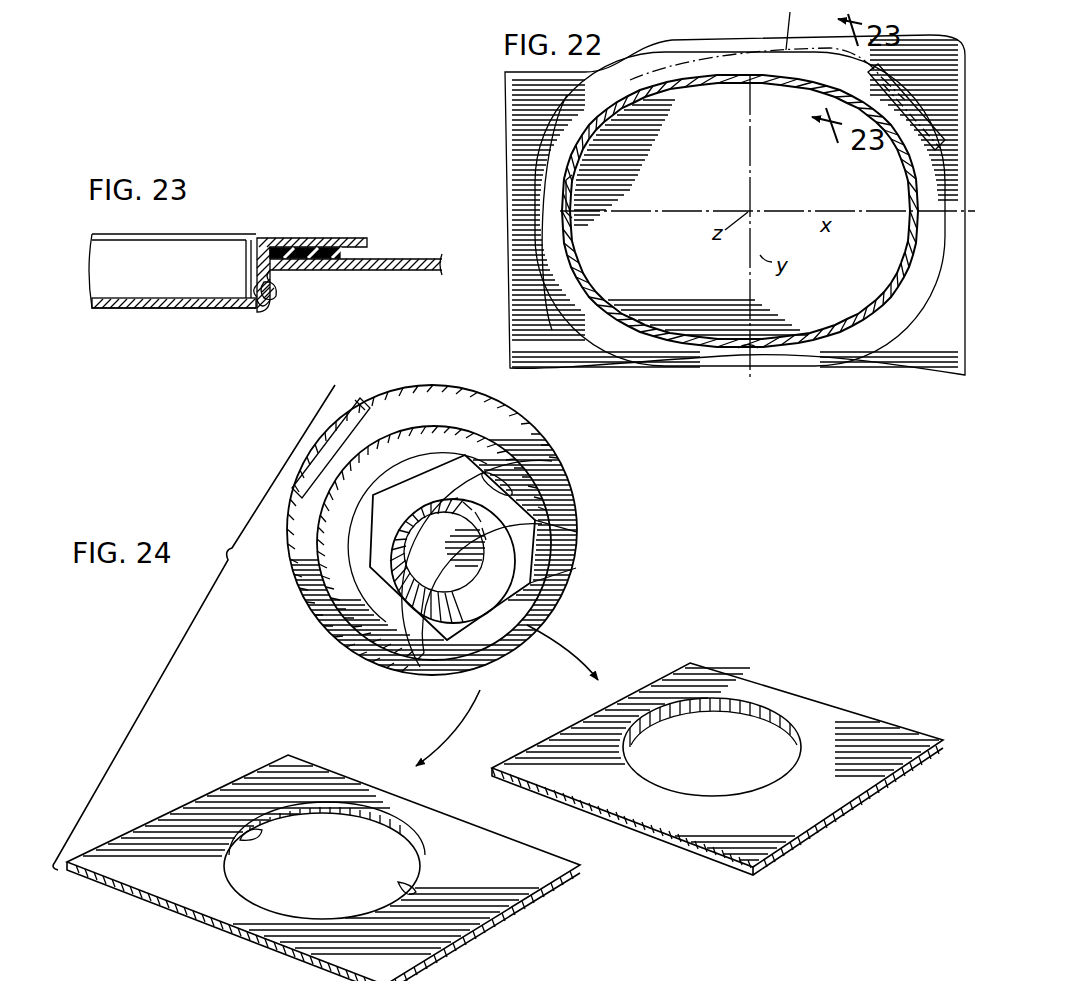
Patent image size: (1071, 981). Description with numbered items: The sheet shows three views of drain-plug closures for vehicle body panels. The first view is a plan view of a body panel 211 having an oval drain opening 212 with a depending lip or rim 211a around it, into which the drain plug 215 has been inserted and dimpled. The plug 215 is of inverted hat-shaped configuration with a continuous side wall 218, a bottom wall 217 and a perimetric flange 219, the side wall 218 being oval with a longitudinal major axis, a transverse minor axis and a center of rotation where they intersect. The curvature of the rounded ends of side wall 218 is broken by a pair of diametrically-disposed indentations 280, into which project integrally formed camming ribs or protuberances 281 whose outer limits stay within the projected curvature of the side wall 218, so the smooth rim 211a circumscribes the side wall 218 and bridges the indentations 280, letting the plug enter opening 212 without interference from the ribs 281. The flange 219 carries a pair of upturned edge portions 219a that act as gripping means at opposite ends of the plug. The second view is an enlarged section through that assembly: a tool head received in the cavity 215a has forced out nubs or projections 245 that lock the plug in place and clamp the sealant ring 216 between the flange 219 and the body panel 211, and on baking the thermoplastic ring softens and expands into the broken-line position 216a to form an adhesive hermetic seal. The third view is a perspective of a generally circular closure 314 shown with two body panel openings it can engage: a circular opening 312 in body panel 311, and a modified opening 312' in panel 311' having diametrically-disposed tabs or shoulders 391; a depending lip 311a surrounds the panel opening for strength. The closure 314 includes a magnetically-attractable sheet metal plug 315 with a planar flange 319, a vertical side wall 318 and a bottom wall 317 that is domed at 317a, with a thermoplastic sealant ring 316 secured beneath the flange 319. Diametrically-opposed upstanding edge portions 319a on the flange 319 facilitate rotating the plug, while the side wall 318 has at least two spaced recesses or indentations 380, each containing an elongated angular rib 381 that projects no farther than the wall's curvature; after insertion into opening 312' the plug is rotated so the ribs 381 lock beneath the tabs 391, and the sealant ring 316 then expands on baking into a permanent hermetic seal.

In FIG. 22, the vehicle body panel 211 is at (723, 368).
In FIG. 23, the vehicle body panel 211 is at (406, 275).
In FIG. 23, the depending lip or rim 211a is at (280, 282).
In FIG. 22, the drain opening 212 is at (742, 85).
In FIG. 23, the drain plug 215 is at (88, 260).
In FIG. 23, the cavity 215a is at (215, 248).
In FIG. 23, the sealant ring 216 is at (318, 240).
In FIG. 23, the expanded sealant ring position 216a is at (370, 250).
In FIG. 23, the bottom wall 217 is at (163, 310).
In FIG. 22, the side wall 218 is at (900, 137).
In FIG. 23, the side wall 218 is at (266, 313).
In FIG. 22, the perimetric flange 219 is at (767, 51).
In FIG. 22, the upturned edge portions 219a is at (905, 94).
In FIG. 22, the nubs or projections 245 is at (765, 352).
In FIG. 23, the nubs or projections 245 is at (278, 294).
In FIG. 22, the indentations 280 is at (580, 157).
In FIG. 22, the ribs or protuberances 281 is at (566, 185).
In FIG. 24, the body panel 311 is at (717, 764).
In FIG. 24, the modified body panel 311' is at (470, 868).
In FIG. 24, the depending lip or rim 311a is at (722, 714).
In FIG. 24, the circular opening 312 is at (713, 721).
In FIG. 24, the modified opening 312' is at (324, 833).
In FIG. 24, the closure 314 is at (549, 424).
In FIG. 24, the sheet metal plug 315 is at (327, 640).
In FIG. 24, the thermoplastic sealant ring 316 is at (552, 507).
In FIG. 24, the bottom wall 317 is at (523, 578).
In FIG. 24, the domed portion 317a is at (463, 572).
In FIG. 24, the vertical side wall 318 is at (417, 470).
In FIG. 24, the flange 319 is at (292, 572).
In FIG. 23, the upstanding edge portions 319a is at (252, 288).
In FIG. 24, the upstanding edge portions 319a is at (360, 405).
In FIG. 24, the recesses or indentations 380 is at (482, 470).
In FIG. 24, the angular rib 381 is at (500, 475).
In FIG. 24, the tabs or shoulders 391 is at (260, 842).